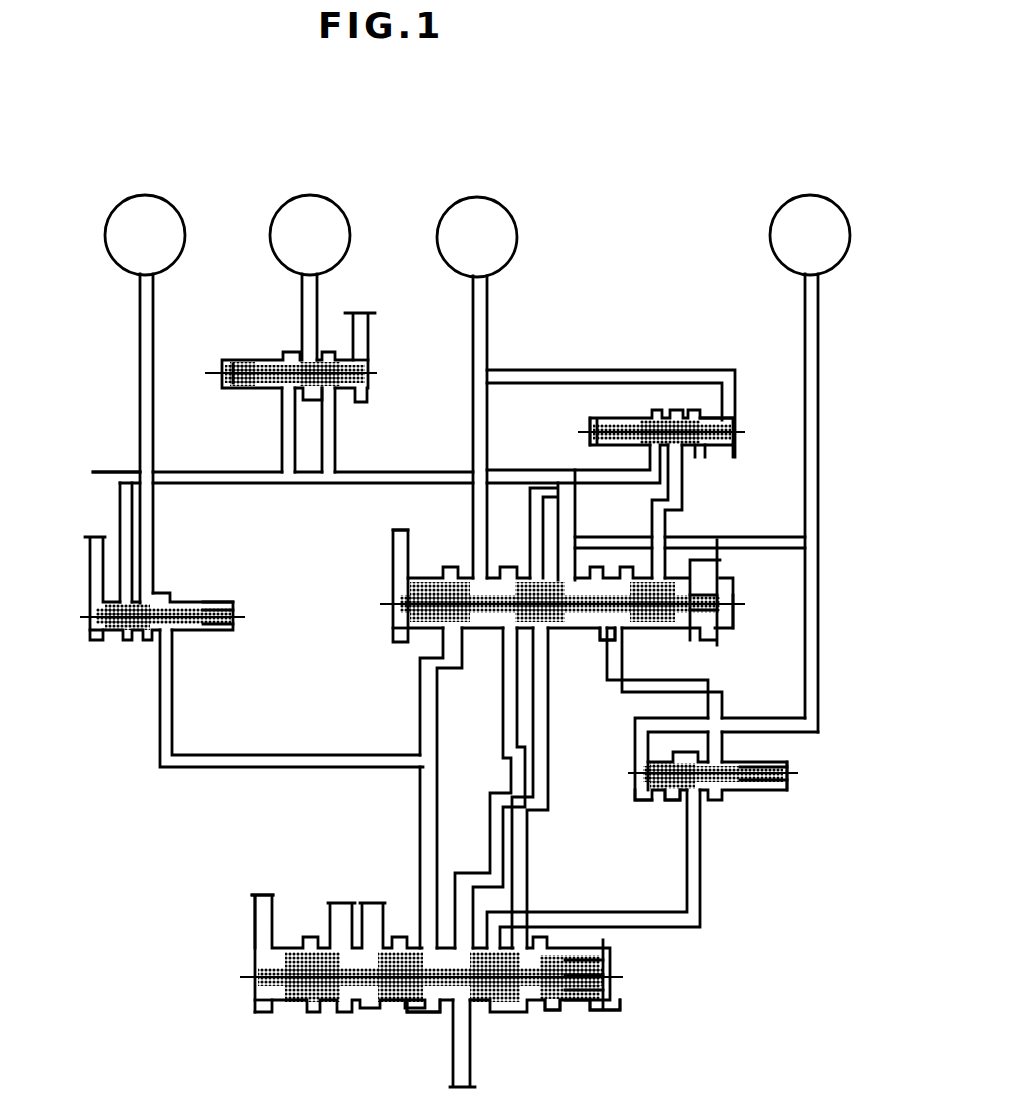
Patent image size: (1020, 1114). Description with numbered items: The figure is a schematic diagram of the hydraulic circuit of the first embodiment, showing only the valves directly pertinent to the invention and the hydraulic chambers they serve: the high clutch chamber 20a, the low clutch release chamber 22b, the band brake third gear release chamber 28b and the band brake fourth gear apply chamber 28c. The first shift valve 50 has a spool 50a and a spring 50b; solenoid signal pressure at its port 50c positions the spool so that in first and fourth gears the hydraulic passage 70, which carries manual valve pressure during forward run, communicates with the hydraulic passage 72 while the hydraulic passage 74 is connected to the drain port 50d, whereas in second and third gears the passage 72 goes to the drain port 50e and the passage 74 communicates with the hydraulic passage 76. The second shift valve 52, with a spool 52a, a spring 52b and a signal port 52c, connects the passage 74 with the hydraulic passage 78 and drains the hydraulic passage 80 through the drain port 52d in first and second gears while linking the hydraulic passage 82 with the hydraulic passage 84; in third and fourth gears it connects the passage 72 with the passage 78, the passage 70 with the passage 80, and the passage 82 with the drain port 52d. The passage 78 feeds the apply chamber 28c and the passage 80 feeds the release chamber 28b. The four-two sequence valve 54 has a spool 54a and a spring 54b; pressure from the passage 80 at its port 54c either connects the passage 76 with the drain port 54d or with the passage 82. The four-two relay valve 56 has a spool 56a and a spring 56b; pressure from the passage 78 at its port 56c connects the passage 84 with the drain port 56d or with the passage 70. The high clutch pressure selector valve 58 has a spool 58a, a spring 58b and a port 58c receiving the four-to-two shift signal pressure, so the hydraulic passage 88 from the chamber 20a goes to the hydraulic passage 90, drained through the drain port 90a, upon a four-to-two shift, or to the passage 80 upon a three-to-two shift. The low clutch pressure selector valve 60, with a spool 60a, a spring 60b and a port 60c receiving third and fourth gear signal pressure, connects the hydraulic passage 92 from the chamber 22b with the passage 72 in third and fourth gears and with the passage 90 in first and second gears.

The high clutch chamber 20a is at (333, 200).
The low clutch release chamber 22b is at (167, 200).
The band brake third gear release chamber 28b is at (826, 200).
The band brake fourth gear apply chamber 28c is at (490, 200).
The first shift valve 50 is at (360, 1018).
The spool 50a is at (255, 986).
The spring 50b is at (600, 1015).
The port 50c is at (255, 946).
The drain port 50d is at (552, 1015).
The drain port 50e is at (415, 1015).
The second shift valve 52 is at (488, 652).
The spool 52a is at (392, 621).
The spring 52b is at (733, 612).
The port 52c is at (392, 560).
The drain port 52d is at (603, 640).
The 4-2 sequence valve 54 is at (720, 804).
The spool 54a is at (642, 775).
The spring 54b is at (788, 763).
The port 54c is at (650, 795).
The drain port 54d is at (690, 802).
The 4-2 relay valve 56 is at (586, 418).
The spool 56a is at (735, 420).
The spring 56b is at (590, 441).
The port 56c is at (736, 450).
The drain port 56d is at (704, 458).
The high clutch pressure selector valve 58 is at (380, 352).
The spool 58a is at (372, 374).
The spring 58b is at (228, 388).
The port 58c is at (360, 392).
The low clutch pressure selector valve 60 is at (205, 645).
The spool 60a is at (174, 645).
The spring 60b is at (215, 604).
The port 60c is at (98, 642).
The hydraulic passage 70 is at (648, 468).
The hydraulic passage 72 is at (438, 814).
The hydraulic passage 74 is at (528, 853).
The hydraulic passage 76 is at (588, 912).
The hydraulic passage 78 is at (736, 372).
The hydraulic passage 80 is at (576, 524).
The hydraulic passage 82 is at (625, 694).
The hydraulic passage 84 is at (684, 500).
The hydraulic passage 88 is at (302, 300).
The hydraulic passage 90 is at (258, 485).
The drain port 90a is at (96, 470).
The hydraulic passage 92 is at (142, 553).